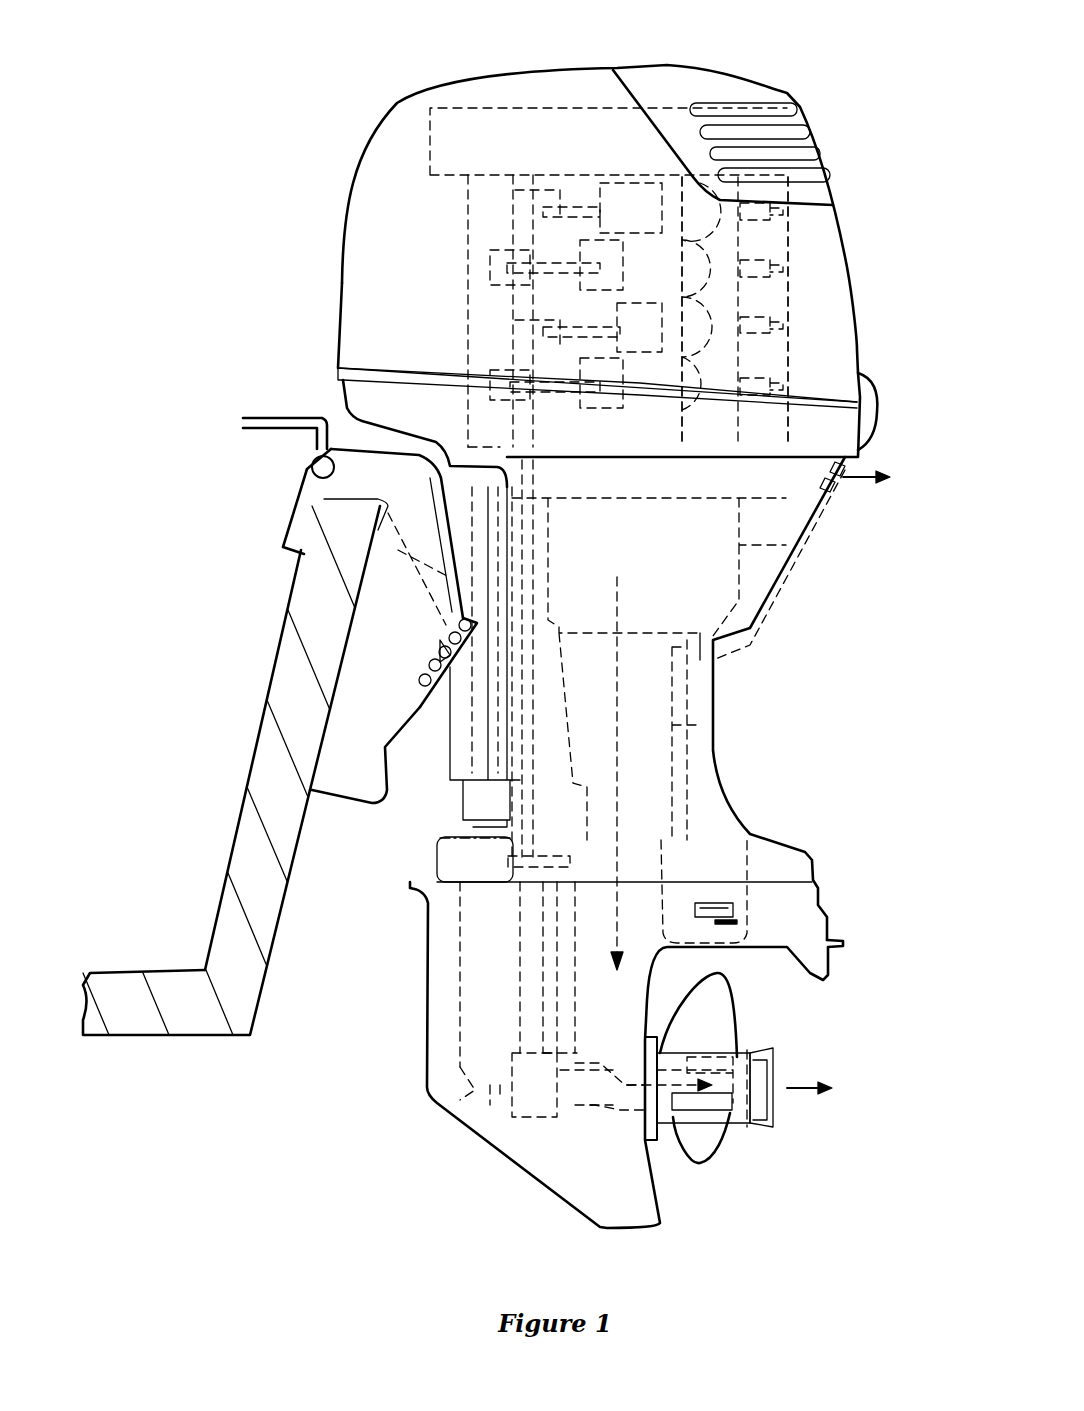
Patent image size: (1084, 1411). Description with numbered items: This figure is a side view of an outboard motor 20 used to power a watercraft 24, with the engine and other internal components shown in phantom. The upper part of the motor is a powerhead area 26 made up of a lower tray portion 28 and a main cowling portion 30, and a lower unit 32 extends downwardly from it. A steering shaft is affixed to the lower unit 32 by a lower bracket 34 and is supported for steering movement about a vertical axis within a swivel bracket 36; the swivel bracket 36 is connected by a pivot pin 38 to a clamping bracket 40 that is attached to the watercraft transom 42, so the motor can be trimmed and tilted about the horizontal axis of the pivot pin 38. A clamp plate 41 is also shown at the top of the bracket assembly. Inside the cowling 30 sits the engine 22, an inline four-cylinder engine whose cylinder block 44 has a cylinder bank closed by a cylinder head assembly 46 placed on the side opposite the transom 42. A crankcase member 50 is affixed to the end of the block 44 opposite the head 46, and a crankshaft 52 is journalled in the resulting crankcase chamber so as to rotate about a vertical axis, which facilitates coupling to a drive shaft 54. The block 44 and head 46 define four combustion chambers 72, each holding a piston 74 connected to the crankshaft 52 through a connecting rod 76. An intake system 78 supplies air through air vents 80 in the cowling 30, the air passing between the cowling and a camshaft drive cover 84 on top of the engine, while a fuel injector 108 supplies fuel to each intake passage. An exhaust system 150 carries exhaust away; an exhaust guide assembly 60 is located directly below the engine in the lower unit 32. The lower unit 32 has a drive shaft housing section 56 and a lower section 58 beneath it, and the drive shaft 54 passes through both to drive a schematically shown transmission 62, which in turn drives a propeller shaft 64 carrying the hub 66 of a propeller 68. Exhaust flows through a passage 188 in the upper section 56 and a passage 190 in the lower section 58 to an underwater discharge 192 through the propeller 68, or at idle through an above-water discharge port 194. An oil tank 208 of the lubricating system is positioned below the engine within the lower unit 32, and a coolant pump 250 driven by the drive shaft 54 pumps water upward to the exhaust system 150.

The outboard motor 20 is at (264, 112).
The engine 22 is at (468, 280).
The watercraft 24 is at (172, 913).
The powerhead area 26 is at (570, 90).
The lower tray portion 28 is at (365, 401).
The main cowling portion 30 is at (345, 280).
The lower unit 32 is at (758, 758).
The lower bracket 34 is at (448, 803).
The swivel bracket 36 is at (447, 753).
The pivot pin 38 is at (310, 470).
The clamping bracket 40 is at (363, 638).
The clamp plate 41 is at (260, 411).
The watercraft transom 42 is at (273, 768).
The cylinder block 44 is at (667, 437).
The cylinder head assembly 46 is at (727, 360).
The crankcase member 50 is at (485, 345).
The crankshaft 52 is at (520, 425).
The drive shaft 54 is at (530, 673).
The drive shaft housing section 56 is at (742, 816).
The lower section 58 is at (821, 905).
The exhaust guide assembly 60 is at (650, 483).
The transmission 62 is at (507, 1122).
The propeller shaft 64 is at (617, 1093).
The hub 66 is at (773, 1060).
The propeller 68 is at (737, 1012).
The combustion chambers 72 is at (717, 238).
The piston 74 is at (653, 180).
The connecting rod 76 is at (580, 207).
The intake system 78 is at (468, 222).
The air vents 80 is at (800, 130).
The camshaft drive cover 84 is at (485, 120).
The fuel injector 108 is at (762, 268).
The exhaust system 150 is at (791, 318).
The exhaust passage 188 is at (698, 728).
The exhaust passage 190 is at (587, 1022).
The propeller shaft end 192 is at (747, 1127).
The above-water discharge port 194 is at (840, 477).
The oil tank 208 is at (793, 548).
The coolant pump 250 is at (500, 862).